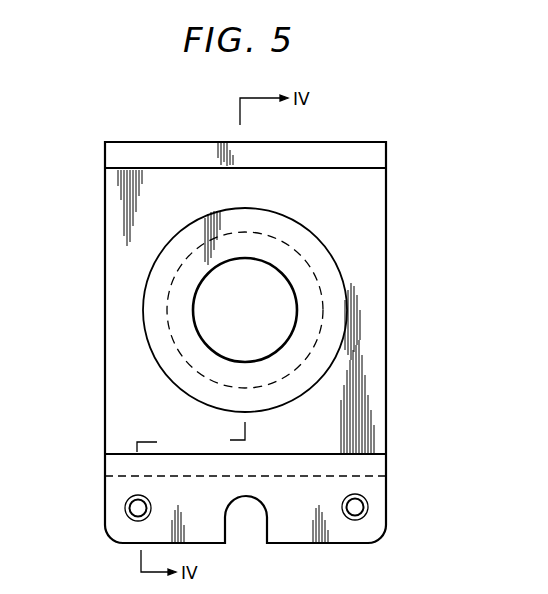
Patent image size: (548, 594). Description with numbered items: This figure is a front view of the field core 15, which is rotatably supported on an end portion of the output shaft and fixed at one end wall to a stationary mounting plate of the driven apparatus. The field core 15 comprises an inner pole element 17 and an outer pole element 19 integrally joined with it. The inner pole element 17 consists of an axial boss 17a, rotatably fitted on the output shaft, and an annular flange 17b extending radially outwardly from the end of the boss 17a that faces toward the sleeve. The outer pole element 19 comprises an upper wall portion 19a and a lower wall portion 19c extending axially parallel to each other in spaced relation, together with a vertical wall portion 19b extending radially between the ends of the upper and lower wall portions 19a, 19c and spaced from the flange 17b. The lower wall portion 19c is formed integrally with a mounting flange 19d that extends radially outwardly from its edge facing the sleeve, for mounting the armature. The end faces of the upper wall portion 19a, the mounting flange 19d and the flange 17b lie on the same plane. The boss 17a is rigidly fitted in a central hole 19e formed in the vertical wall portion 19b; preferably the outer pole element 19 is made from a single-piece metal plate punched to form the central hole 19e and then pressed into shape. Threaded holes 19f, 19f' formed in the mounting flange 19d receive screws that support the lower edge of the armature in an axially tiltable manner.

The field core 15 is at (374, 123).
The inner pole element 17 is at (142, 298).
The axial boss 17a is at (195, 370).
The annular flange 17b is at (143, 330).
The outer pole element 19 is at (386, 271).
The upper wall portion 19a is at (372, 152).
The vertical wall portion 19b is at (375, 208).
The lower wall portion 19c is at (380, 461).
The mounting flange 19d is at (370, 495).
The central hole 19e is at (318, 333).
The threaded hole 19f is at (97, 516).
The threaded hole 19f' is at (399, 520).